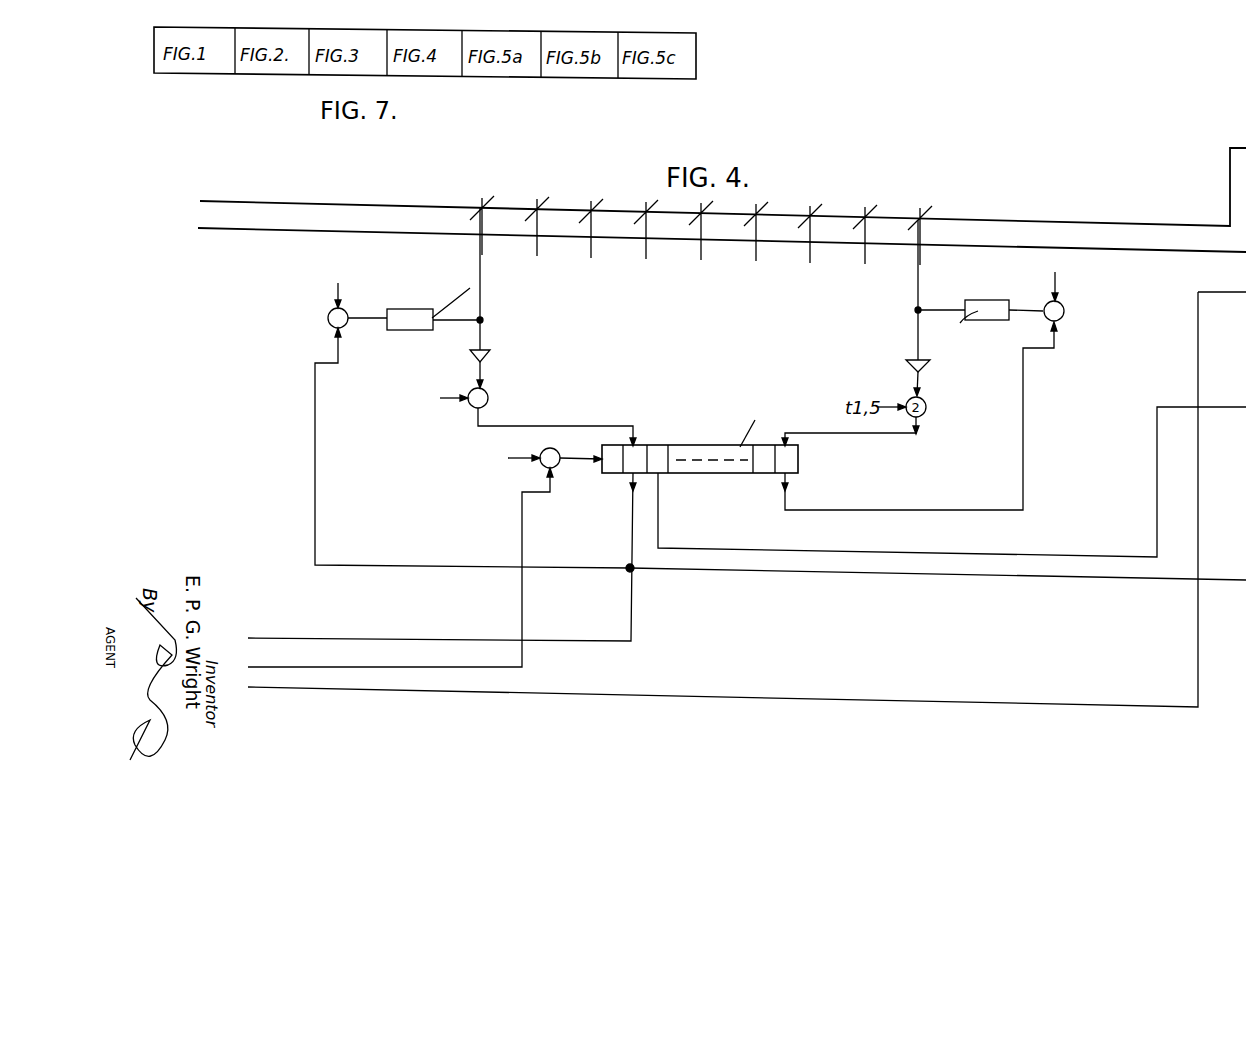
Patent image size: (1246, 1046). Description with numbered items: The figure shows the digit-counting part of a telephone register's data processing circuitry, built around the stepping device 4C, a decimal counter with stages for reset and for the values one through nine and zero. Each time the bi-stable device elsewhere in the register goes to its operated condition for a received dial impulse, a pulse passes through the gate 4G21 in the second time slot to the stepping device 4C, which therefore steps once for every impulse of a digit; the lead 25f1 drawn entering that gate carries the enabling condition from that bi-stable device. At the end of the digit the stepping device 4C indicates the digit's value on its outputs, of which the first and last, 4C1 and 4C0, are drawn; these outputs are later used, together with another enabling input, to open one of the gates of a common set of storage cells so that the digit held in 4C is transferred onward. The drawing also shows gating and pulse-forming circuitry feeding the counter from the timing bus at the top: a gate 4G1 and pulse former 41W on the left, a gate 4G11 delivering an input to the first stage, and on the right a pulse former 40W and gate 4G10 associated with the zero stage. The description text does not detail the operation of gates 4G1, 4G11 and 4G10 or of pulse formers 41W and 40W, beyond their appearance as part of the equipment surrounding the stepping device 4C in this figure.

The gate 4G1 is at (316, 297).
The pulse former 41W is at (429, 294).
The input from stepping device 4C1 is at (780, 454).
The gate 4G11 is at (521, 416).
The gate 4G21 is at (535, 452).
The lead 25f1 is at (407, 567).
The stepping device 4C is at (700, 437).
The pulse former 40W is at (980, 317).
The gate 4G10 is at (1079, 292).
The input from stepping device 4C0 is at (925, 416).